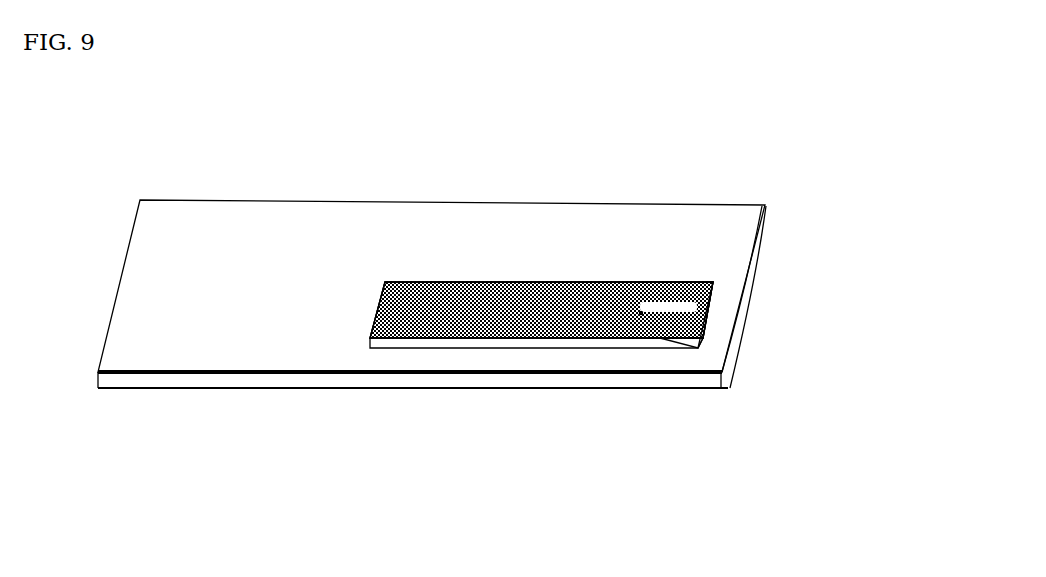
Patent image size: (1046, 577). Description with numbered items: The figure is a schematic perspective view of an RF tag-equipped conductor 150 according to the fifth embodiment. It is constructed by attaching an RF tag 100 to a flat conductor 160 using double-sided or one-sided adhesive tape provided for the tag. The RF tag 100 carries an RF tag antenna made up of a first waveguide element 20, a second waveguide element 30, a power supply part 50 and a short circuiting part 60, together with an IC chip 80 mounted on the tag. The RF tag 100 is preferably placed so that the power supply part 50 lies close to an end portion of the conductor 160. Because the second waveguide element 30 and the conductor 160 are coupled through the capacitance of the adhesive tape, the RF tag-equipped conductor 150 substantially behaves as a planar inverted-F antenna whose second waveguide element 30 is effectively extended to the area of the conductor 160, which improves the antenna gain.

The RF tag-equipped conductor 150 is at (243, 117).
The conductor 160 is at (323, 245).
The RF tag 100 is at (483, 298).
The short circuiting part 60 is at (675, 290).
The second waveguide element 30 is at (705, 318).
The first waveguide element 20 is at (513, 315).
The IC chip 80 is at (641, 316).
The power supply part 50 is at (680, 327).